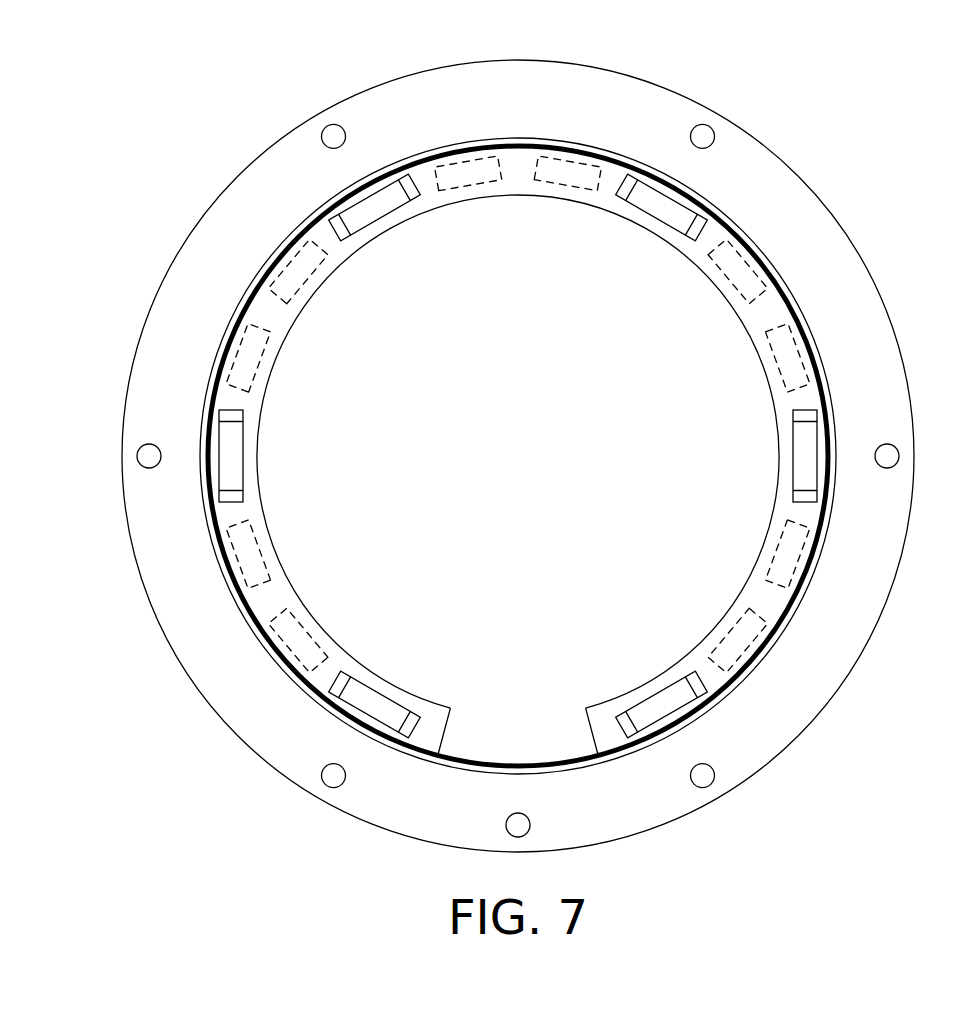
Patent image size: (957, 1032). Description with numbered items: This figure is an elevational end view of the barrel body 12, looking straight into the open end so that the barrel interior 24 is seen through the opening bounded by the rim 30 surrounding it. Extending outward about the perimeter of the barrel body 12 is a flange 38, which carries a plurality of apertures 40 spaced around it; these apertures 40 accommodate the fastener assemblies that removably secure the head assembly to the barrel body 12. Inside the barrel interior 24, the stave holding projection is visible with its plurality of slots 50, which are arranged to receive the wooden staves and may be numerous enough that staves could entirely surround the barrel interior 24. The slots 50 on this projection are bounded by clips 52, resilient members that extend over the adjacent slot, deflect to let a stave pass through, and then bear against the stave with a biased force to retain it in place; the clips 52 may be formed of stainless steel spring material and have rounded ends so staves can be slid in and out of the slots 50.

The barrel body 12 is at (224, 88).
The barrel interior 24 is at (500, 451).
The rim 30 is at (541, 138).
The flange 38 is at (223, 224).
The apertures 40 is at (333, 777).
The slots 50 is at (233, 440).
The clips 52 is at (232, 494).